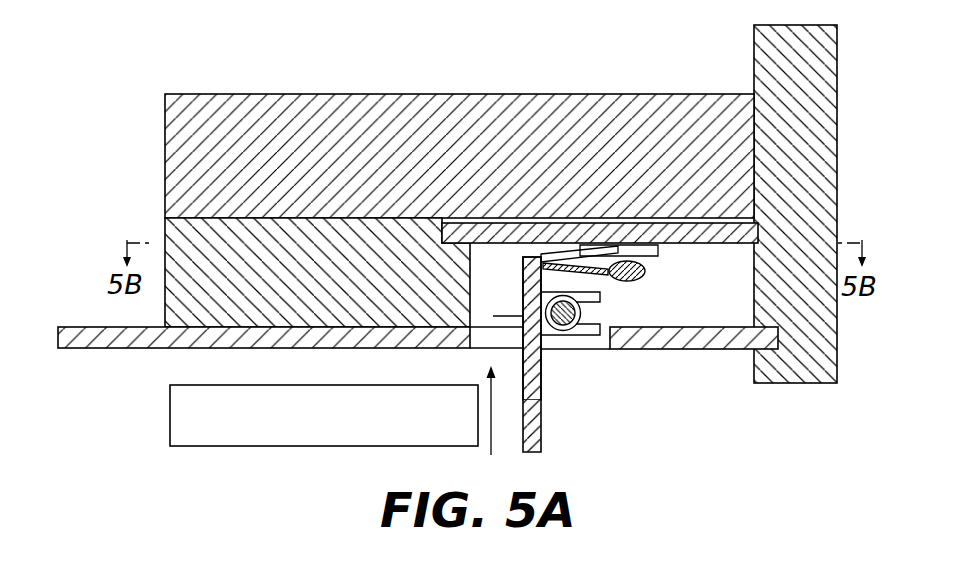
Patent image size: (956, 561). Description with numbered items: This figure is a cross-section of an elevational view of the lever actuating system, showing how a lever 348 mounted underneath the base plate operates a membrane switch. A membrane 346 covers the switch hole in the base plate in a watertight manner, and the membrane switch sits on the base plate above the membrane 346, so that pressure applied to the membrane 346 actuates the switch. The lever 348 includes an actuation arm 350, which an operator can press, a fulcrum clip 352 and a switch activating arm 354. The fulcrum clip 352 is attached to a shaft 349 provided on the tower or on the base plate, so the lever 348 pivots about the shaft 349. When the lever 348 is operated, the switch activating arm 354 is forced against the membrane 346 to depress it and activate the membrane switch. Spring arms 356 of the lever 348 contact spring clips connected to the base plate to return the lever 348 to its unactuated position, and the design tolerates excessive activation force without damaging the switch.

The membrane 346 is at (658, 249).
The lever 348 is at (543, 393).
The shaft 349 is at (556, 314).
The actuation arm 350 is at (532, 435).
The fulcrum clip 352 is at (582, 323).
The switch activating arm 354 is at (633, 282).
The spring arms 356 is at (641, 263).